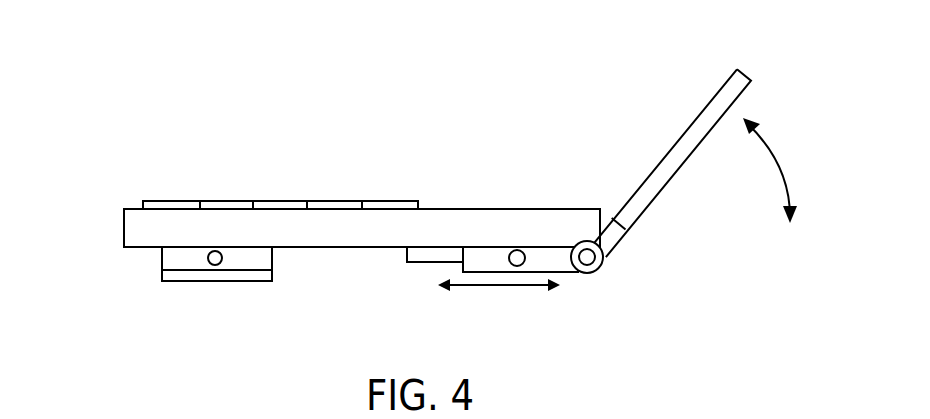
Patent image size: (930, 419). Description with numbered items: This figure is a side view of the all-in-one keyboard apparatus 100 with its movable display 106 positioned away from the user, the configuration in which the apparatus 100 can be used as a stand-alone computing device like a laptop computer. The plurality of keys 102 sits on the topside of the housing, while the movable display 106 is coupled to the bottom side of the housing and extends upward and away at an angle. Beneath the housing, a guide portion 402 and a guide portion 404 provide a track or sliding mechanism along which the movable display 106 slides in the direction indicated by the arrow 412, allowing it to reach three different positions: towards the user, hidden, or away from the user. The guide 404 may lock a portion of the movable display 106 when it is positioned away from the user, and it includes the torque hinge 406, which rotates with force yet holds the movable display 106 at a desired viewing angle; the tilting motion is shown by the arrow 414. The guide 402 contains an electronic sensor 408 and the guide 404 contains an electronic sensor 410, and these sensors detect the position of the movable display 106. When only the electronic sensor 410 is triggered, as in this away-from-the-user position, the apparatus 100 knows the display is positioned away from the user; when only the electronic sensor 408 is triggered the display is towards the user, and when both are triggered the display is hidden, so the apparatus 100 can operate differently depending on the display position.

The all-in-one (AIO) keyboard apparatus 100 is at (92, 45).
The plurality of keys 102 is at (333, 200).
The movable display 106 is at (748, 67).
The guide portion 402 is at (214, 283).
The guide portion 404 is at (565, 275).
The torque hinge 406 is at (603, 263).
The electronic sensor 408 is at (207, 257).
The electronic sensor 410 is at (517, 267).
The arrow 412 is at (465, 287).
The arrow 414 is at (782, 167).